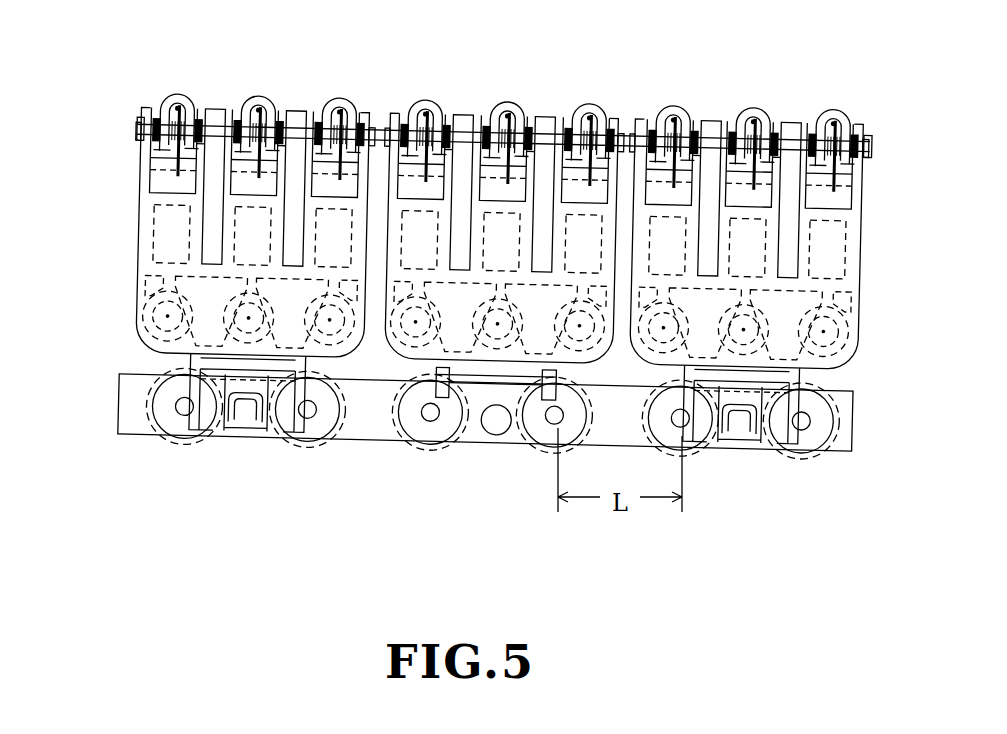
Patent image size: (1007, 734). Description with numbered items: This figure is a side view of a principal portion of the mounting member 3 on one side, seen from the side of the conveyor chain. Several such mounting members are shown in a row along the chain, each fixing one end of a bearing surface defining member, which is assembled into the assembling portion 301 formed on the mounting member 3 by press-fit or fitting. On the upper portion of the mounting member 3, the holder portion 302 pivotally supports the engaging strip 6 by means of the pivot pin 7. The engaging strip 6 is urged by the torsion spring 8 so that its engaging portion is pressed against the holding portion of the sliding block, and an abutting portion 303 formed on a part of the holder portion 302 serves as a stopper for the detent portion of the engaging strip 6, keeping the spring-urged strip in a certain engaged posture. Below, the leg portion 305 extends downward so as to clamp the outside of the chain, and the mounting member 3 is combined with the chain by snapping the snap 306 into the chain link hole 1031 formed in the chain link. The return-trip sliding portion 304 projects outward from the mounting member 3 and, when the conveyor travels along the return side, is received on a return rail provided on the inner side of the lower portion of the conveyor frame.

The mounting member on one side 3 is at (143, 283).
The assembling portion 301 is at (153, 235).
The holder portion 302 is at (145, 110).
The abutting portion 303 is at (165, 171).
The return-trip sliding portion 304 is at (167, 423).
The leg portion 305 is at (197, 363).
The snap 306 is at (250, 412).
The engaging strip 6 is at (172, 95).
The pivot pin 7 is at (212, 127).
The torsion spring 8 is at (167, 156).
The chain link hole 1031 is at (502, 428).